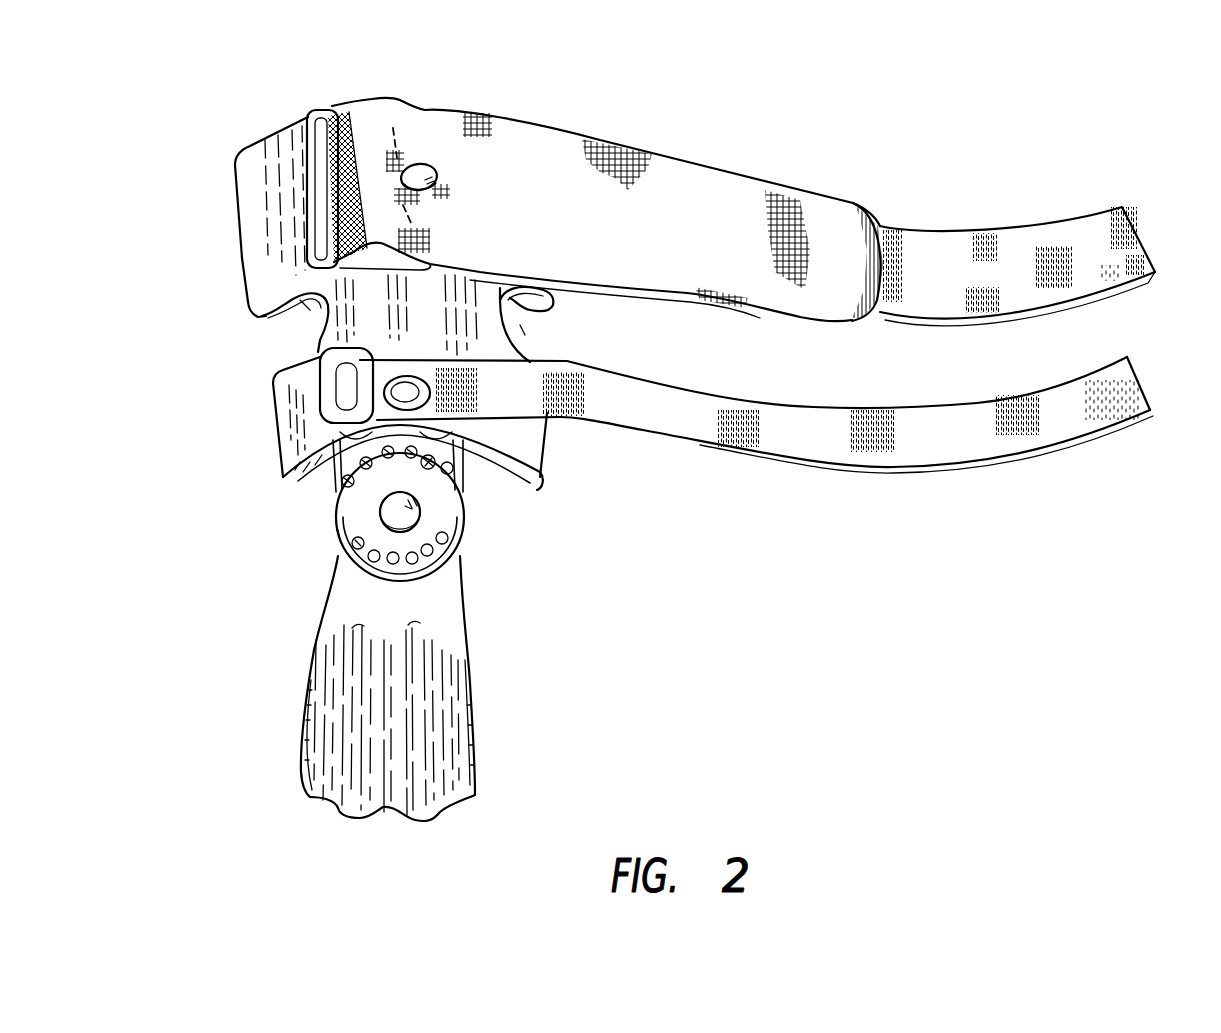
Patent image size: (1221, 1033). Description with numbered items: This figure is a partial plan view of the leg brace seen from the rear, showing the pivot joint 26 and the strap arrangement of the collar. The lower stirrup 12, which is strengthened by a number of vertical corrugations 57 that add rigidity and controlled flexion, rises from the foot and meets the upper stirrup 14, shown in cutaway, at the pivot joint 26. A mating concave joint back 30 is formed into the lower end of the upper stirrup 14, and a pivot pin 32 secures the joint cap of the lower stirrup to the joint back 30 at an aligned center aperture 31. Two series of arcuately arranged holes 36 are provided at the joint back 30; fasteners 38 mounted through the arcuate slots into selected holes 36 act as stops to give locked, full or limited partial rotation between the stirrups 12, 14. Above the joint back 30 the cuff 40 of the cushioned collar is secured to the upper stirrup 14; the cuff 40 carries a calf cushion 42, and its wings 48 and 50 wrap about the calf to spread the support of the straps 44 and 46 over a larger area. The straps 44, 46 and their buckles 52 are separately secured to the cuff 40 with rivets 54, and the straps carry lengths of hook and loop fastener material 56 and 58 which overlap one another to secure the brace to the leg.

The lower stirrup 12 is at (473, 717).
The upper stirrup 14 is at (337, 538).
The pivot joint 26 is at (455, 522).
The joint back 30 is at (447, 553).
The center aperture 31 is at (392, 518).
The pivot pin 32 is at (385, 530).
The holes 36 is at (334, 520).
The fasteners 38 is at (443, 521).
The cuff 40 is at (288, 440).
The calf cushion 42 is at (523, 310).
The strap 44 is at (657, 153).
The strap 46 is at (803, 465).
The wing 48 is at (247, 264).
The wing 50 is at (279, 390).
The buckle 52 is at (320, 108).
The rivet 54 is at (423, 170).
The hook and loop fastener material 56 is at (976, 232).
The vertical corrugations 57 is at (415, 718).
The hook and loop fastener material 58 is at (808, 207).